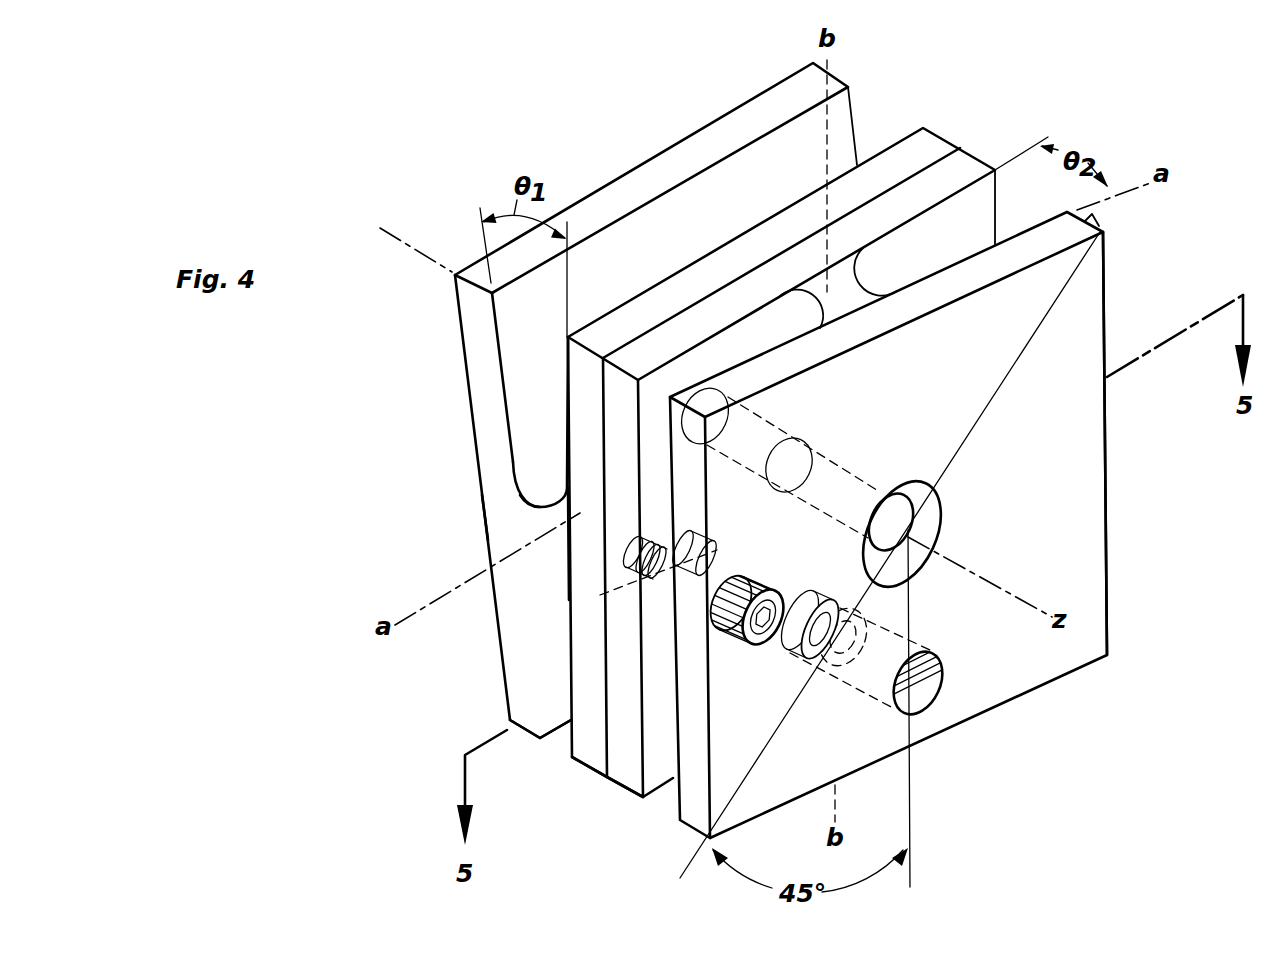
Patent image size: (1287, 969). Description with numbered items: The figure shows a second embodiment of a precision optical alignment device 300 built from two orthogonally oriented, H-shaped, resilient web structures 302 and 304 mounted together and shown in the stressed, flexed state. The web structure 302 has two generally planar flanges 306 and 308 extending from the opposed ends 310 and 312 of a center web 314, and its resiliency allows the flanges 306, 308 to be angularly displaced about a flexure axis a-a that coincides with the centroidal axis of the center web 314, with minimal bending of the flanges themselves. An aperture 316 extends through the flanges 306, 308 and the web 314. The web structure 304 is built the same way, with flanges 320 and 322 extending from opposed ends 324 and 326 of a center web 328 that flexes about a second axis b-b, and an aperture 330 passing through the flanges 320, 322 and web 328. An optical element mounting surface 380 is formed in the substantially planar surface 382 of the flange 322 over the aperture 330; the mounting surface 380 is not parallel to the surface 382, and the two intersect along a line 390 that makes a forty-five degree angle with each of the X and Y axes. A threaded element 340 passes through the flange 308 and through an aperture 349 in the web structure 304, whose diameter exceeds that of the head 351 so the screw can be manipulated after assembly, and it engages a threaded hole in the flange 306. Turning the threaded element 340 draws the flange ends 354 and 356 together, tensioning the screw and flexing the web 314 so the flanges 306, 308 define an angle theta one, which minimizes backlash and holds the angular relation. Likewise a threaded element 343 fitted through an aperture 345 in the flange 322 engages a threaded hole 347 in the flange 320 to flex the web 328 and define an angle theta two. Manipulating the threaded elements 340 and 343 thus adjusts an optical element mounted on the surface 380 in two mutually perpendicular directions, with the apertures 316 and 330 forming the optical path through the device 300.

The precision optical alignment device 300 is at (1150, 135).
The web structure 302 is at (748, 102).
The web structure 304 is at (1108, 490).
The flange 306 is at (510, 327).
The flange 308 is at (583, 407).
The end of center web 310 is at (498, 515).
The end of center web 312 is at (585, 550).
The center web 314 is at (540, 530).
The aperture 316 is at (760, 410).
The flange 320 is at (975, 160).
The flange 322 is at (1100, 222).
The end of center web 324 is at (808, 260).
The end of center web 326 is at (870, 312).
The center web 328 is at (837, 297).
The aperture 330 is at (837, 455).
The threaded element 340 is at (727, 558).
The threaded element 343 is at (750, 647).
The aperture 345 is at (693, 620).
The threaded hole 347 is at (607, 557).
The aperture 349 is at (935, 680).
The head 351 is at (847, 600).
The end of flange 354 is at (510, 713).
The end of flange 356 is at (587, 753).
The optical element mounting surface 380 is at (930, 540).
The substantially planar surface 382 is at (1090, 295).
The line 390 is at (1018, 367).